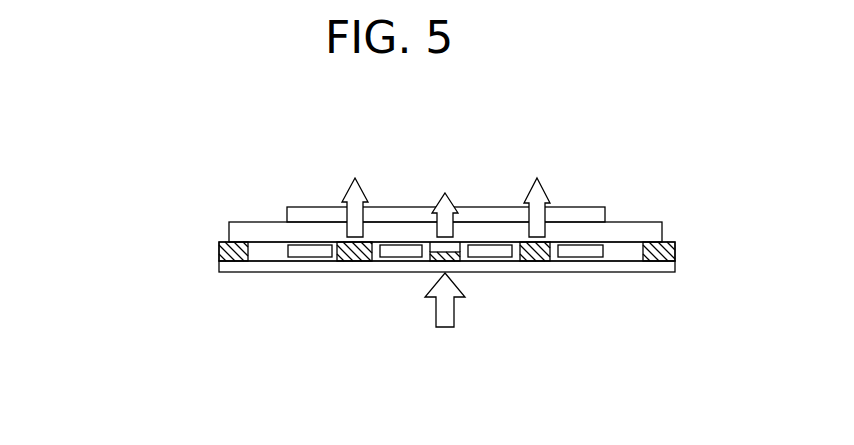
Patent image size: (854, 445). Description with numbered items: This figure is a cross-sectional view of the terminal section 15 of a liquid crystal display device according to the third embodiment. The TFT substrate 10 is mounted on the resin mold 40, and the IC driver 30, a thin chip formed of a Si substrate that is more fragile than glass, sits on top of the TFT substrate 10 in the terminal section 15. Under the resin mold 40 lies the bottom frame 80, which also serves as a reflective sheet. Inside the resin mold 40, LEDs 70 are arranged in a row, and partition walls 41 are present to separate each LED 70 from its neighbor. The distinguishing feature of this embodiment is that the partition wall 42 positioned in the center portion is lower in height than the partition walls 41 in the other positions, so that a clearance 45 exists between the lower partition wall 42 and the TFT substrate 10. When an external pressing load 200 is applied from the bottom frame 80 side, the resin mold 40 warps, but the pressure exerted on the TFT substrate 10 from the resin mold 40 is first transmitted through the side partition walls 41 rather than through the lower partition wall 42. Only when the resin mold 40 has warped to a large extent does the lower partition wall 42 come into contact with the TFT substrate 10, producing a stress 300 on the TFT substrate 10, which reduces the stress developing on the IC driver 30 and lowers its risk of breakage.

The TFT substrate 10 is at (381, 226).
The terminal section 15 is at (230, 236).
The IC driver 30 is at (300, 213).
The resin mold 40 is at (219, 250).
The partition walls 41 is at (355, 258).
The lower partition wall 42 is at (433, 242).
The clearance 45 is at (460, 242).
The LED 70 is at (303, 258).
The bottom frame 80 is at (219, 270).
The pressing load 200 is at (450, 317).
The stress 300 is at (346, 195).